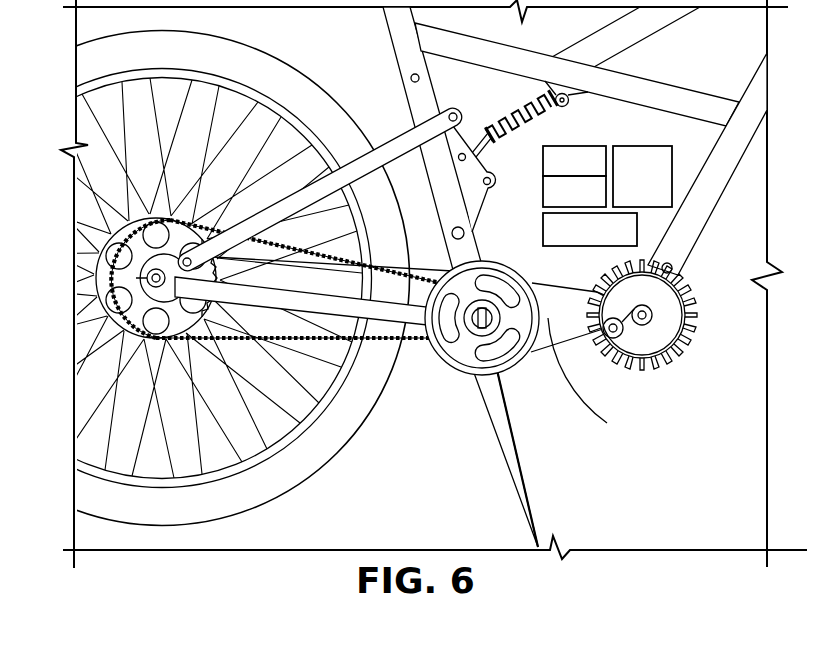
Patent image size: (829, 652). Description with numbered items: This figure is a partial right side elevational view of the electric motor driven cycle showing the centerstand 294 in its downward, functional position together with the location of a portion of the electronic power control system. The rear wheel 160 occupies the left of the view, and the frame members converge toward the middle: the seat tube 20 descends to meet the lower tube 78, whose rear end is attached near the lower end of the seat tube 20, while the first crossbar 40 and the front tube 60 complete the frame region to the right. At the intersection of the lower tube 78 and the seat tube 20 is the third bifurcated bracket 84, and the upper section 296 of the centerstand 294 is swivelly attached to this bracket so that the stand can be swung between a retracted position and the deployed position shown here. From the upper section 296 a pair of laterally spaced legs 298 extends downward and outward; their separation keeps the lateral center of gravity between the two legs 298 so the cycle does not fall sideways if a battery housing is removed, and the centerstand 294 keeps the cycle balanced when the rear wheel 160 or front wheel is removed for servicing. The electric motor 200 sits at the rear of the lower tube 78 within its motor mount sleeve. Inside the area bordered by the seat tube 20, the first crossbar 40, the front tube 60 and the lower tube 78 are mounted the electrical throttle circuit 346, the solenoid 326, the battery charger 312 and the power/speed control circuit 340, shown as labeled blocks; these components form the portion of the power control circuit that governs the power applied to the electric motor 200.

The seat tube 20 is at (405, 52).
The rear wheel 160 is at (292, 96).
The first crossbar 40 is at (622, 87).
The front tube 60 is at (688, 227).
The third bifurcated bracket 84 is at (453, 327).
The upper section 296 is at (480, 353).
The legs 298 is at (503, 452).
The centerstand 294 is at (507, 420).
The lower tube 78 is at (596, 380).
The electric motor 200 is at (662, 332).
The electrical throttle circuit 346 is at (574, 162).
The solenoid 326 is at (574, 193).
The battery charger 312 is at (642, 178).
The power/speed control circuit 340 is at (590, 229).